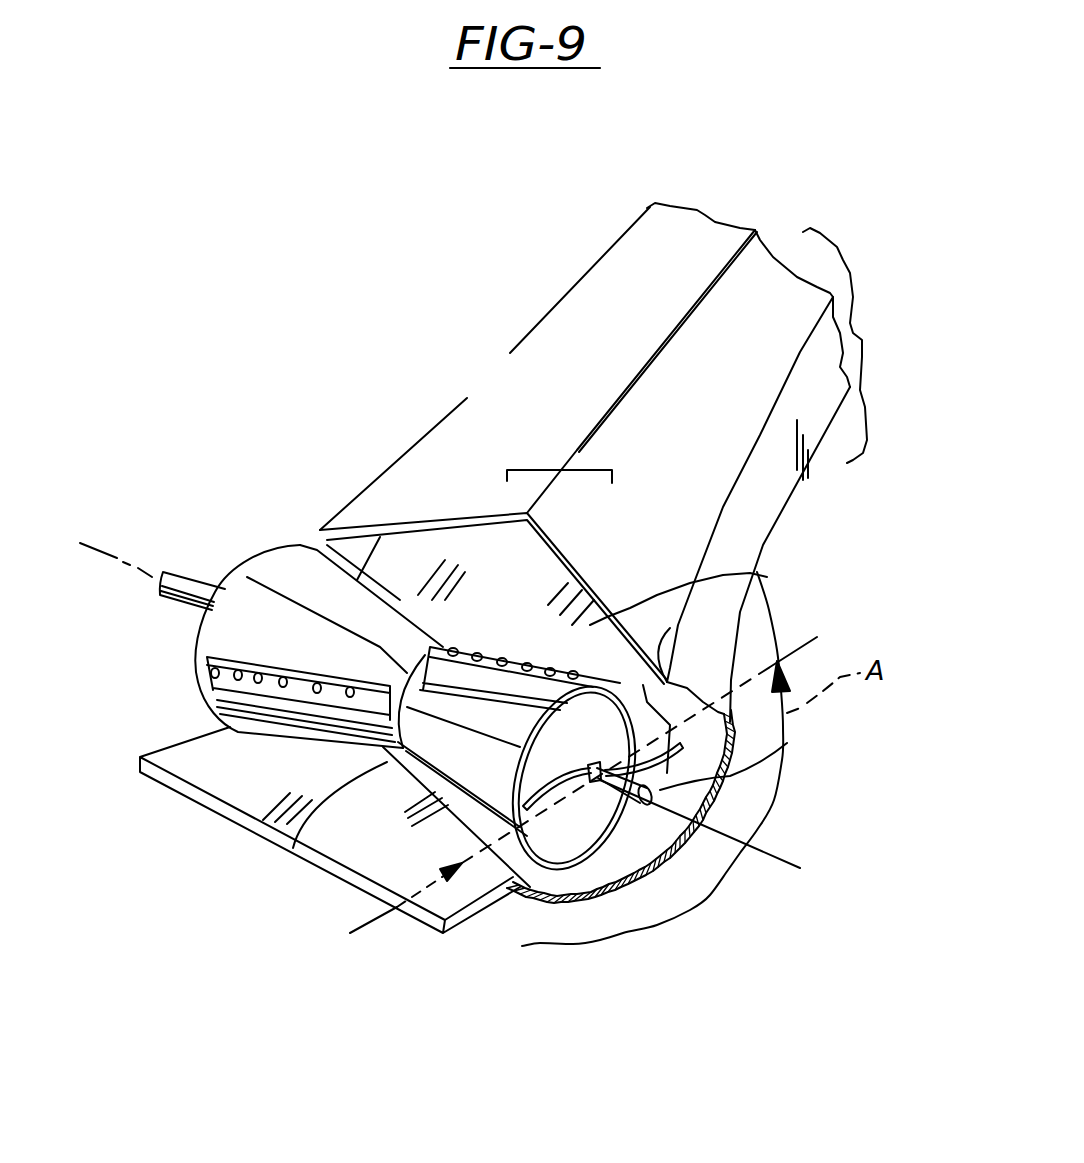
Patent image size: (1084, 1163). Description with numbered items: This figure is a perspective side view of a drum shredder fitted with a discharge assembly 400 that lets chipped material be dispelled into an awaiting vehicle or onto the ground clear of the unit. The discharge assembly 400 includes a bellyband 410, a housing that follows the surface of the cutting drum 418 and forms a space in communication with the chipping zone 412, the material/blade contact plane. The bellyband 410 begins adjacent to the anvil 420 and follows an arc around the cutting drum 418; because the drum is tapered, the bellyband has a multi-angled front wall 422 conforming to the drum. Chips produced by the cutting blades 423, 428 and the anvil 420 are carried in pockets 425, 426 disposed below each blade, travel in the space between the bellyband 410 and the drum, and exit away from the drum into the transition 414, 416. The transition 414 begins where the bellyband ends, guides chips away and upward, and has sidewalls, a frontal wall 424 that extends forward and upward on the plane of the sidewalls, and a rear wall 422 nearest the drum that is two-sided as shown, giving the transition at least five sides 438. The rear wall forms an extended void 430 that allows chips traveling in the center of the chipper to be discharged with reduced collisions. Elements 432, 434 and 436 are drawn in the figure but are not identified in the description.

The discharge assembly 400 is at (343, 337).
The bellyband 410 is at (520, 946).
The chipping zone 412 is at (303, 734).
The transition 414 is at (673, 857).
The transition 416 is at (585, 565).
The cutting drum 418 is at (277, 560).
The anvil 420 is at (293, 848).
The rear wall 422 is at (563, 453).
The cutting blade 423 is at (207, 665).
The frontal wall 424 is at (757, 572).
The pocket 425 is at (227, 705).
The pocket 426 is at (410, 667).
The cutting blade 428 is at (515, 646).
The extended void 430 is at (482, 537).
The latch 432 is at (670, 627).
The rotation arrow 434 is at (783, 745).
The handle 436 is at (560, 772).
The five sides of the transition 438 is at (865, 345).